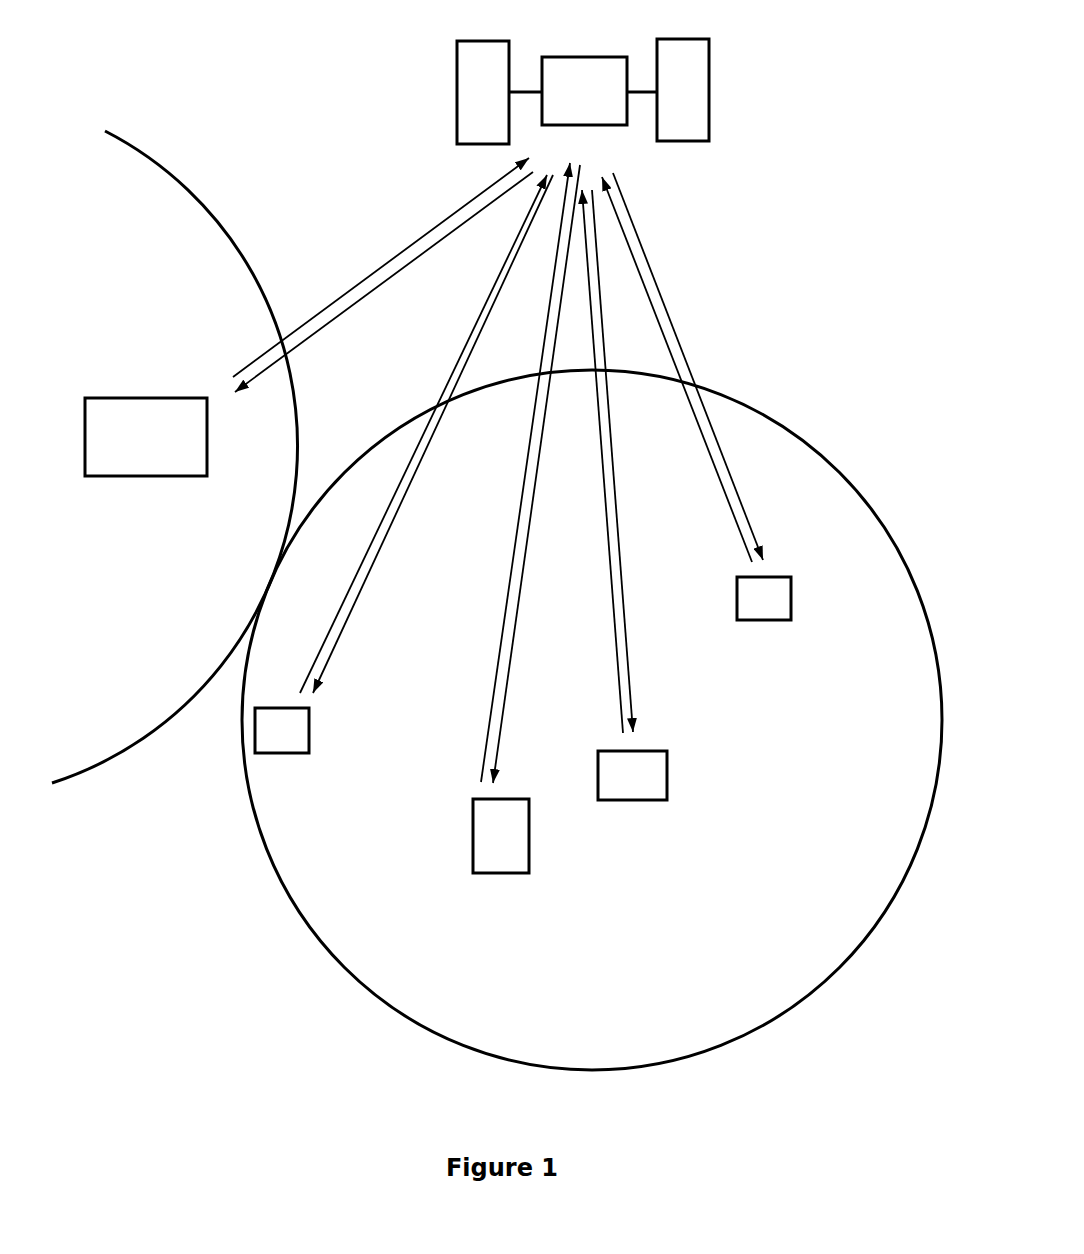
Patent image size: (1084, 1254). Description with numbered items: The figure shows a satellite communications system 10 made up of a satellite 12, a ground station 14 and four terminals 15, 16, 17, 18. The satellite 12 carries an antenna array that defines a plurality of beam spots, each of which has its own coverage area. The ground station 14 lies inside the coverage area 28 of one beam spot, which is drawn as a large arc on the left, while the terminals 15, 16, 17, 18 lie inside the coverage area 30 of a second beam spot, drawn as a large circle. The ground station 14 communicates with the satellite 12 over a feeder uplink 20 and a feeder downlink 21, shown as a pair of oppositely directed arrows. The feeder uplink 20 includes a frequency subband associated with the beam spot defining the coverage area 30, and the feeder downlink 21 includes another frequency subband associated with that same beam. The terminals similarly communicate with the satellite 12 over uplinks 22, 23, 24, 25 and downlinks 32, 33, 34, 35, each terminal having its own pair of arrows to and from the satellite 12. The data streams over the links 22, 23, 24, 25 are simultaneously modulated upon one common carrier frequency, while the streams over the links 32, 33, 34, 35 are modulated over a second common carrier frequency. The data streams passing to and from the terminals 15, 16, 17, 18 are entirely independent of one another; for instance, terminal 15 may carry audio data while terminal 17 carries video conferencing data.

The satellite communications system 10 is at (823, 147).
The satellite 12 is at (583, 57).
The ground station 14 is at (153, 397).
The terminal 15 is at (280, 753).
The terminal 16 is at (505, 873).
The terminal 17 is at (630, 800).
The terminal 18 is at (762, 620).
The uplink 20 is at (357, 285).
The downlink 21 is at (367, 295).
The uplink 22 is at (370, 577).
The uplink 23 is at (523, 578).
The uplink 24 is at (612, 482).
The uplink 25 is at (677, 333).
The coverage area 28 is at (132, 747).
The coverage area 30 is at (810, 995).
The downlink 32 is at (360, 575).
The downlink 33 is at (512, 575).
The downlink 34 is at (602, 468).
The downlink 35 is at (662, 340).